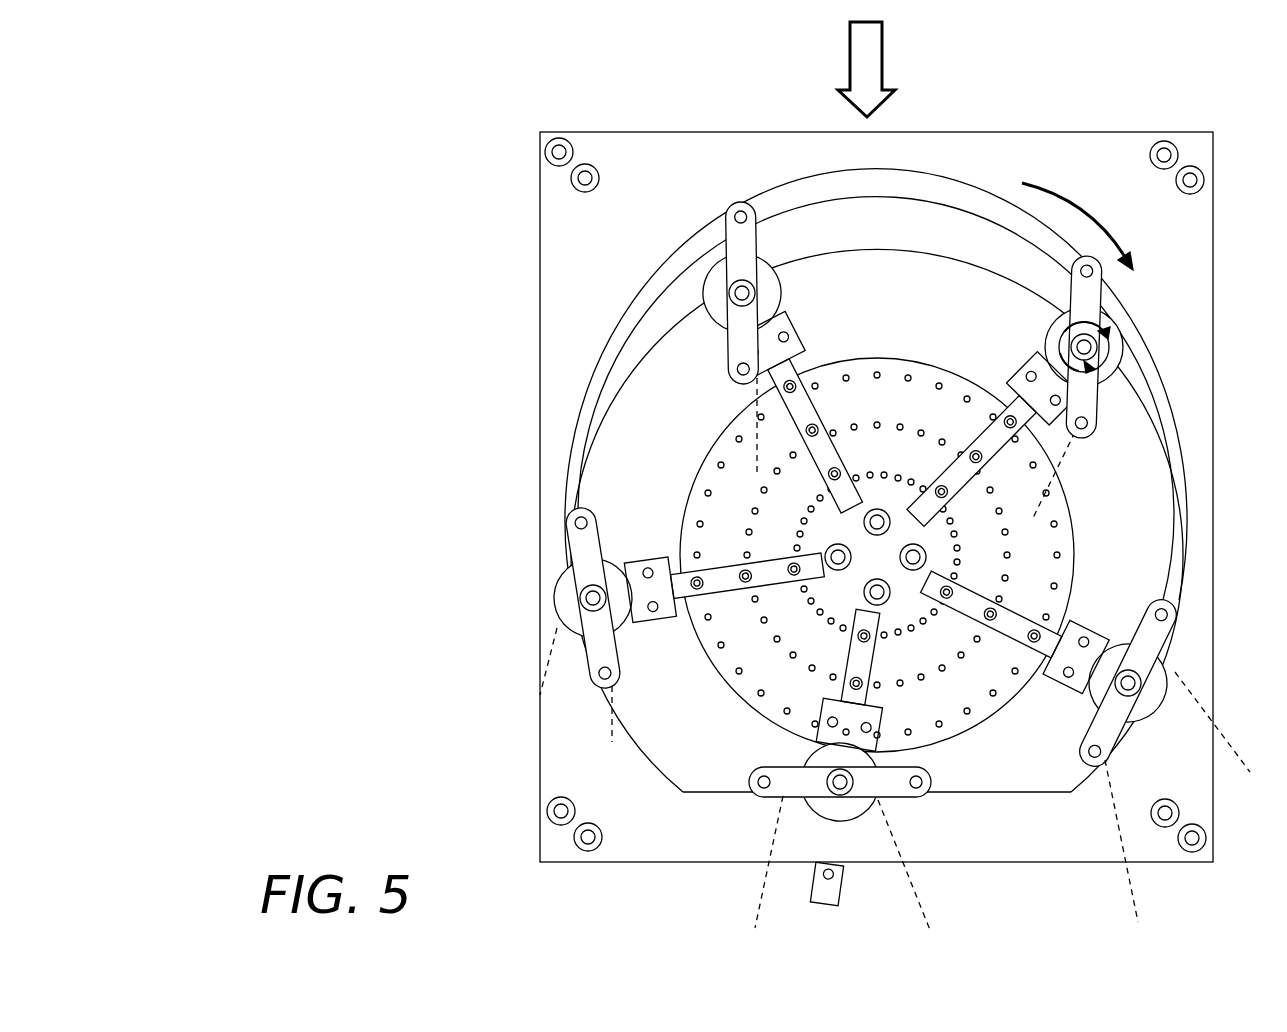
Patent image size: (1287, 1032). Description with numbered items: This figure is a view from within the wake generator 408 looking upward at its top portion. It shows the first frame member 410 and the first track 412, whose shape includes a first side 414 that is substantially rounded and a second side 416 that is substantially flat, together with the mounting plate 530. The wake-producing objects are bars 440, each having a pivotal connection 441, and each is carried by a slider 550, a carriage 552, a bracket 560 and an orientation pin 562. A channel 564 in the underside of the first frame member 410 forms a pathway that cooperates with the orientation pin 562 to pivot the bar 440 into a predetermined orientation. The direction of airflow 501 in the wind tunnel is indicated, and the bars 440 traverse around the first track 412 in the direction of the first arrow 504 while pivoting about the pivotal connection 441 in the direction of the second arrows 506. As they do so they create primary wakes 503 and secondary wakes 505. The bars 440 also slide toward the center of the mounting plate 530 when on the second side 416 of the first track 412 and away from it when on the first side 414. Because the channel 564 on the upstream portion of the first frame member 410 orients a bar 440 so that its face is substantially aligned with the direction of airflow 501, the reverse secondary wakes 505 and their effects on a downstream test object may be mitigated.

The wake generator 408 is at (566, 66).
The direction of airflow 501 is at (884, 53).
The first side 414 is at (866, 247).
The first frame member 410 is at (562, 272).
The channel 564 is at (597, 402).
The secondary wakes 505 is at (727, 290).
The first arrow 504 is at (1086, 214).
The second arrows 506 is at (1093, 318).
The mounting plate 530 is at (1045, 513).
The slider 550 is at (1010, 617).
The carriage 552 is at (1085, 682).
The bracket 560 is at (1080, 682).
The orientation pin 562 is at (1172, 612).
The bar 440 is at (631, 598).
The pivotal connection 441 is at (588, 596).
The first track 412 is at (697, 793).
The primary wakes 503 is at (757, 908).
The second side 416 is at (945, 795).